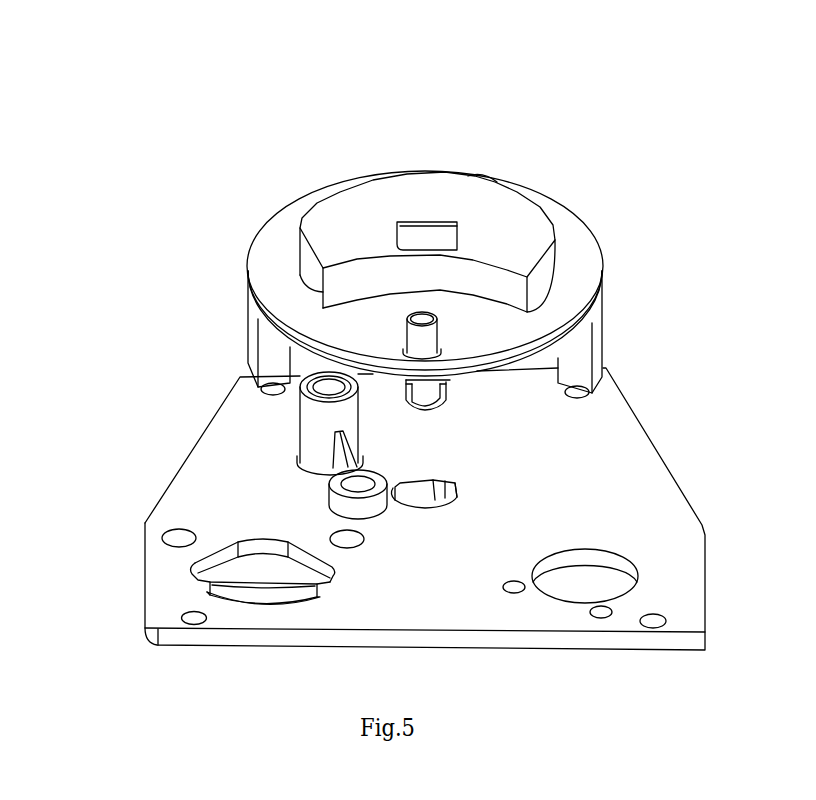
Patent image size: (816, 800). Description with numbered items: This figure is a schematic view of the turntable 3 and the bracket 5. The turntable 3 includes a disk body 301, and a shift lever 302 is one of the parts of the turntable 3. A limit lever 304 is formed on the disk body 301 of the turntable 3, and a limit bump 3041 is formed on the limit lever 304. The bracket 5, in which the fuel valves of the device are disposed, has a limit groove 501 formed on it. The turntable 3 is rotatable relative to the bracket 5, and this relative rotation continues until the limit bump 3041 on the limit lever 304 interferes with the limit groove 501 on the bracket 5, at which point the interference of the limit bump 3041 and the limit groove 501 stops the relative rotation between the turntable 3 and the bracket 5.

The turntable 3 is at (383, 175).
The disk body 301 is at (297, 215).
The shift lever 302 is at (423, 341).
The limit lever 304 is at (410, 405).
The limit bump 3041 is at (428, 397).
The bracket 5 is at (146, 520).
The limit groove 501 is at (437, 492).